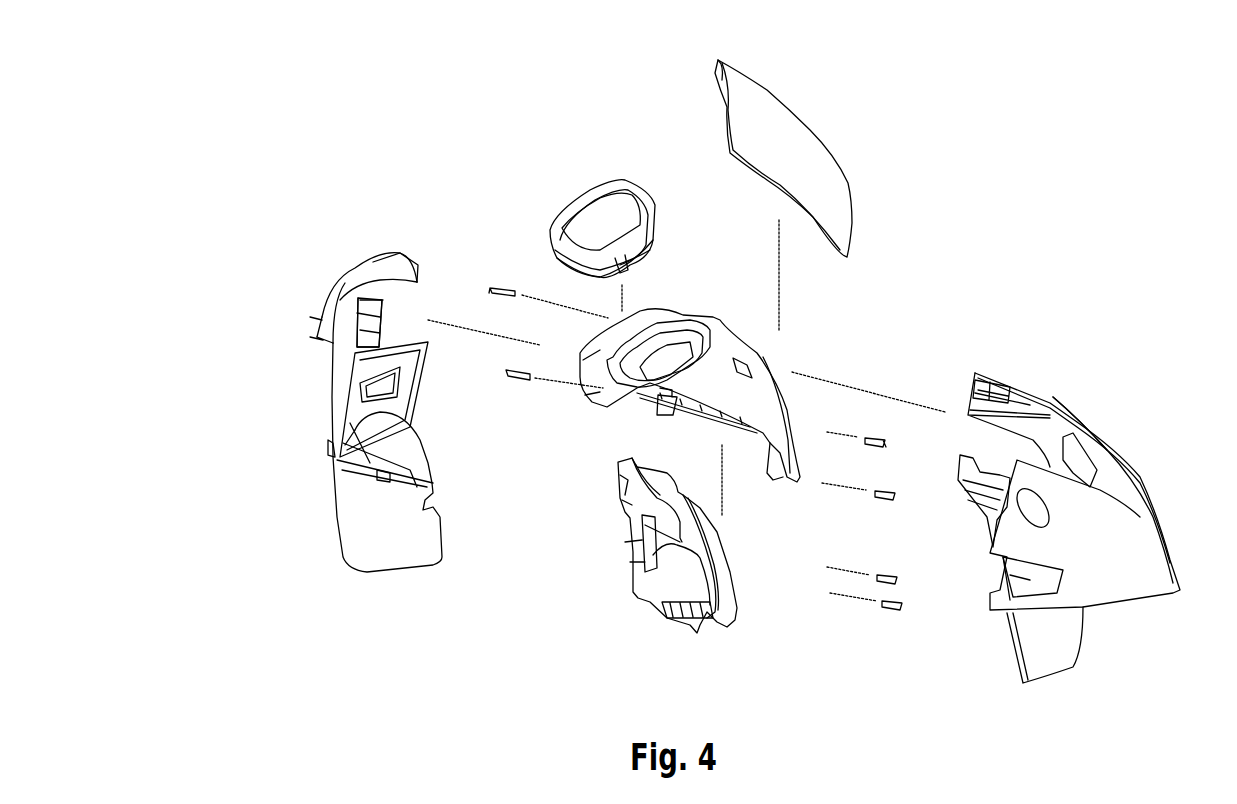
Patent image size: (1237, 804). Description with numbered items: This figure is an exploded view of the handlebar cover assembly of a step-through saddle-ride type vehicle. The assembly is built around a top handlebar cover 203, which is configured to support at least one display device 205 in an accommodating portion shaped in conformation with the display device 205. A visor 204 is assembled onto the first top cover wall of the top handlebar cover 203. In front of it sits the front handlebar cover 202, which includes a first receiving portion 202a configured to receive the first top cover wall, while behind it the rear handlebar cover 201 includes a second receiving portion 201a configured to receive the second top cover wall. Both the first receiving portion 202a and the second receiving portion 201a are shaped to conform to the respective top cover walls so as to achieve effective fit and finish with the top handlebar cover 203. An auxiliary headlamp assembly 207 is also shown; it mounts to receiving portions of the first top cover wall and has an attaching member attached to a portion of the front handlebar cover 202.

The rear handlebar cover 201 is at (393, 345).
The second receiving portion 201a is at (369, 322).
The front handlebar cover 202 is at (1080, 428).
The first receiving portion 202a is at (1055, 472).
The top handlebar cover 203 is at (758, 390).
The visor 204 is at (803, 137).
The display device 205 is at (590, 215).
The auxiliary headlamp assembly 207 is at (650, 565).